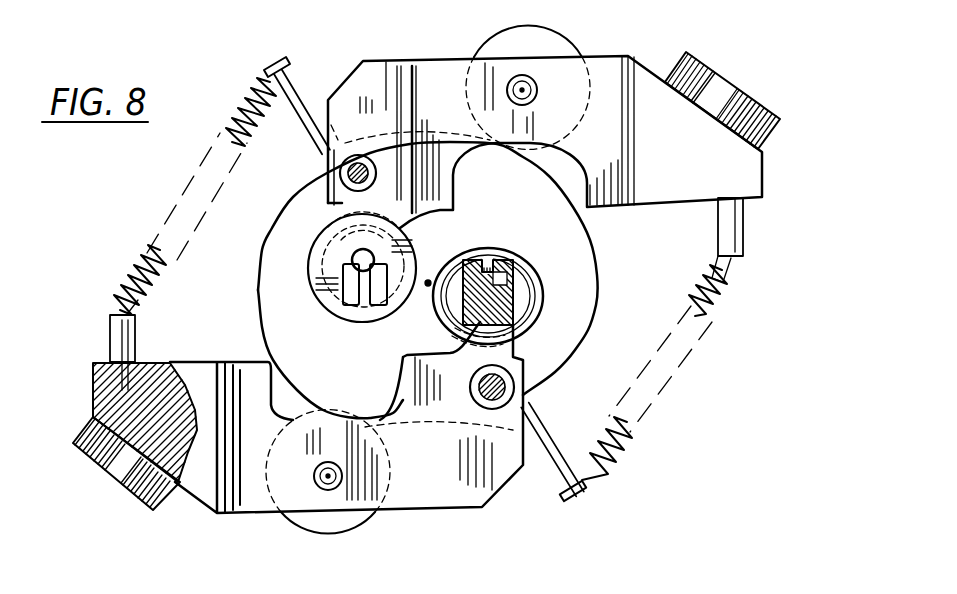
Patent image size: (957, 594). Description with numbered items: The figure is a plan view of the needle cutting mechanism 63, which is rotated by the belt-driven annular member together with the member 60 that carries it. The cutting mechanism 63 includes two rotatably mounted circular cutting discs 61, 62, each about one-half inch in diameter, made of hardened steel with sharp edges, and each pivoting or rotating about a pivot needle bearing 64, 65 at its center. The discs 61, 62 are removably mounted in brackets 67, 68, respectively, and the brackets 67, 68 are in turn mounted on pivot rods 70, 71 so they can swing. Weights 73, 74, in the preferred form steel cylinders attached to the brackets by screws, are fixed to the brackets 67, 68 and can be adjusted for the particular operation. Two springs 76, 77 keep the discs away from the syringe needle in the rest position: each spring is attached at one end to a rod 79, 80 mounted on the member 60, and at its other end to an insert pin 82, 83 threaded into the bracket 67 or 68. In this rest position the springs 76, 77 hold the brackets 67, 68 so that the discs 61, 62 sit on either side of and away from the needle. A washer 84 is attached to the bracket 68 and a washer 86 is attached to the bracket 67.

The member 60 is at (287, 325).
The circular cutting disc 61 is at (342, 264).
The circular cutting disc 62 is at (545, 256).
The cutting mechanism 63 is at (612, 46).
The pivot needle bearing 64 is at (352, 257).
The pivot needle bearing 65 is at (515, 303).
The bracket 67 is at (322, 228).
The bracket 68 is at (525, 359).
The pivot rod 70 is at (343, 180).
The pivot rod 71 is at (513, 385).
The weight 73 is at (531, 42).
The weight 74 is at (340, 524).
The spring 76 is at (133, 263).
The spring 77 is at (622, 462).
The rod 79 is at (302, 80).
The rod 80 is at (545, 478).
The insert pin 82 is at (118, 343).
The insert pin 83 is at (748, 222).
The washer 84 is at (83, 452).
The washer 86 is at (748, 92).